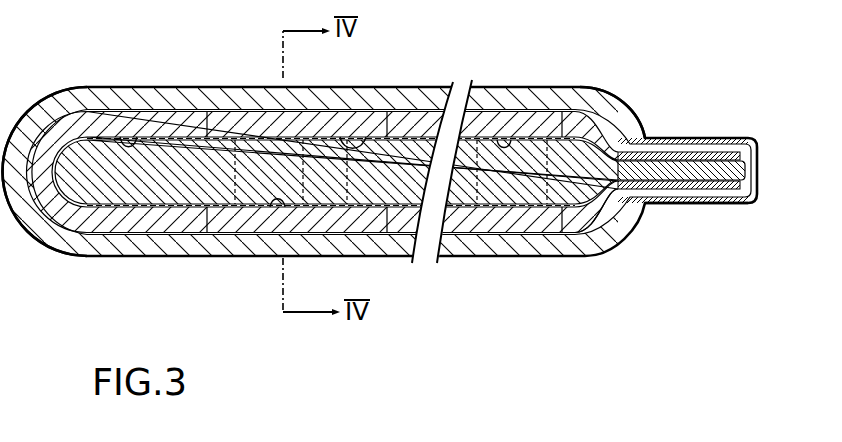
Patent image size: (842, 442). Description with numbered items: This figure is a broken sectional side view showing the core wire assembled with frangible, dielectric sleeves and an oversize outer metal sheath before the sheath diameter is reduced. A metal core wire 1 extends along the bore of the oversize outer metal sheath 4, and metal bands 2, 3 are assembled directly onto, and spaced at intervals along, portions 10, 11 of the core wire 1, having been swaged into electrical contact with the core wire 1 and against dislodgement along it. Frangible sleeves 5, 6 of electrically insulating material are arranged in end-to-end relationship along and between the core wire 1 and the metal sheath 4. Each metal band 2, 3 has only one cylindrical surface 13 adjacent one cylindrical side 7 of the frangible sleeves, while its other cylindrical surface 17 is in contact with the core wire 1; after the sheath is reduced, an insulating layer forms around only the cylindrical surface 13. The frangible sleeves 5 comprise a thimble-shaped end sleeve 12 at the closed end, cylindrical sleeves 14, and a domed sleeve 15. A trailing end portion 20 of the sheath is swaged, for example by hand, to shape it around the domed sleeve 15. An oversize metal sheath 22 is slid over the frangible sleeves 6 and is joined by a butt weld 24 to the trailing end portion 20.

The metal core wire 1 is at (287, 137).
The metal band 2 is at (170, 229).
The metal band 3 is at (661, 158).
The outer metal sheath 4 is at (148, 88).
The frangible sleeves 5 is at (247, 117).
The frangible sleeves 6 is at (689, 189).
The cylindrical side 7 is at (357, 138).
The core wire portion 10 is at (147, 195).
The core wire portion 11 is at (671, 170).
The thimble-shaped end sleeve 12 is at (84, 257).
The cylindrical surface 13 is at (330, 156).
The cylindrical sleeves 14 is at (408, 220).
The domed sleeve 15 is at (587, 218).
The cylindrical surface 17 is at (126, 136).
The trailing end portion 20 is at (591, 98).
The oversize metal sheath 22 is at (703, 203).
The butt weld 24 is at (648, 138).